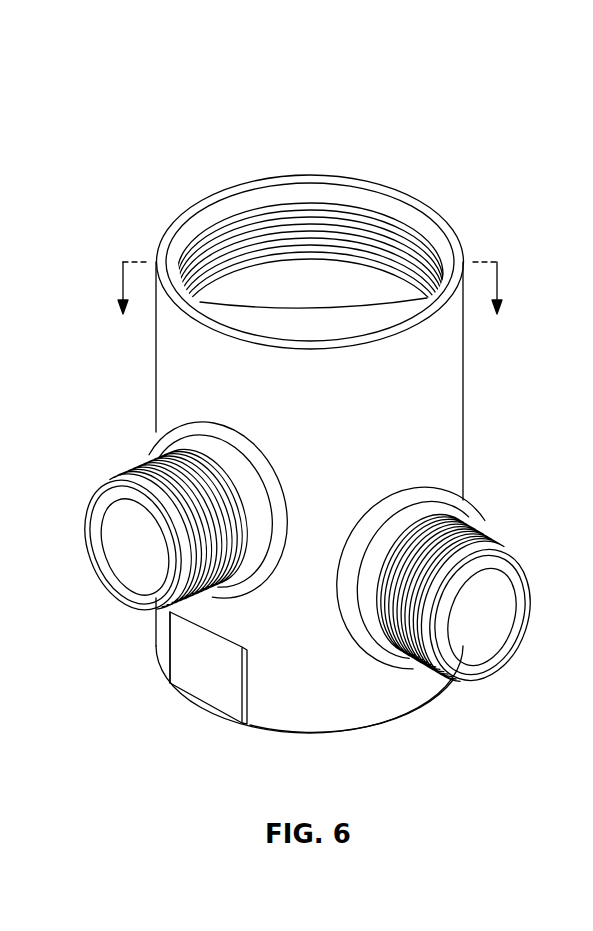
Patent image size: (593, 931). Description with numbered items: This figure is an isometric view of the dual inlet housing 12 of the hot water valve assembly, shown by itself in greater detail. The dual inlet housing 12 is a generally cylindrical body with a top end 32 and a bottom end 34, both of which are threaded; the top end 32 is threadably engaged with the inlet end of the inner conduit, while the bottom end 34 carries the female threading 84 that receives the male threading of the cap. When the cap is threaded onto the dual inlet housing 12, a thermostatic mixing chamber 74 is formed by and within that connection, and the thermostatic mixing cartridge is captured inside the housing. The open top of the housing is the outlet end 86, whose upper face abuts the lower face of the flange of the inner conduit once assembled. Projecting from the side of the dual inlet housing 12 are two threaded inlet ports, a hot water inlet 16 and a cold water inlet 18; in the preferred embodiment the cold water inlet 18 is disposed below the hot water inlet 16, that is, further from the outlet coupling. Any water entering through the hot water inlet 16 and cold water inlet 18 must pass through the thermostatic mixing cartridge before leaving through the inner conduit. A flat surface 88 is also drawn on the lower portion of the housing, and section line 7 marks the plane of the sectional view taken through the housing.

The dual inlet housing 12 is at (447, 403).
The hot water inlet 16 is at (123, 560).
The cold water inlet 18 is at (513, 603).
The top end 32 is at (405, 196).
The bottom end 34 is at (390, 705).
The thermostatic mixing chamber 74 is at (325, 296).
The female threading 84 is at (253, 730).
The outlet end 86 is at (217, 193).
The pad edge 88 is at (163, 673).
The section line for FIG. 7 is at (309, 307).